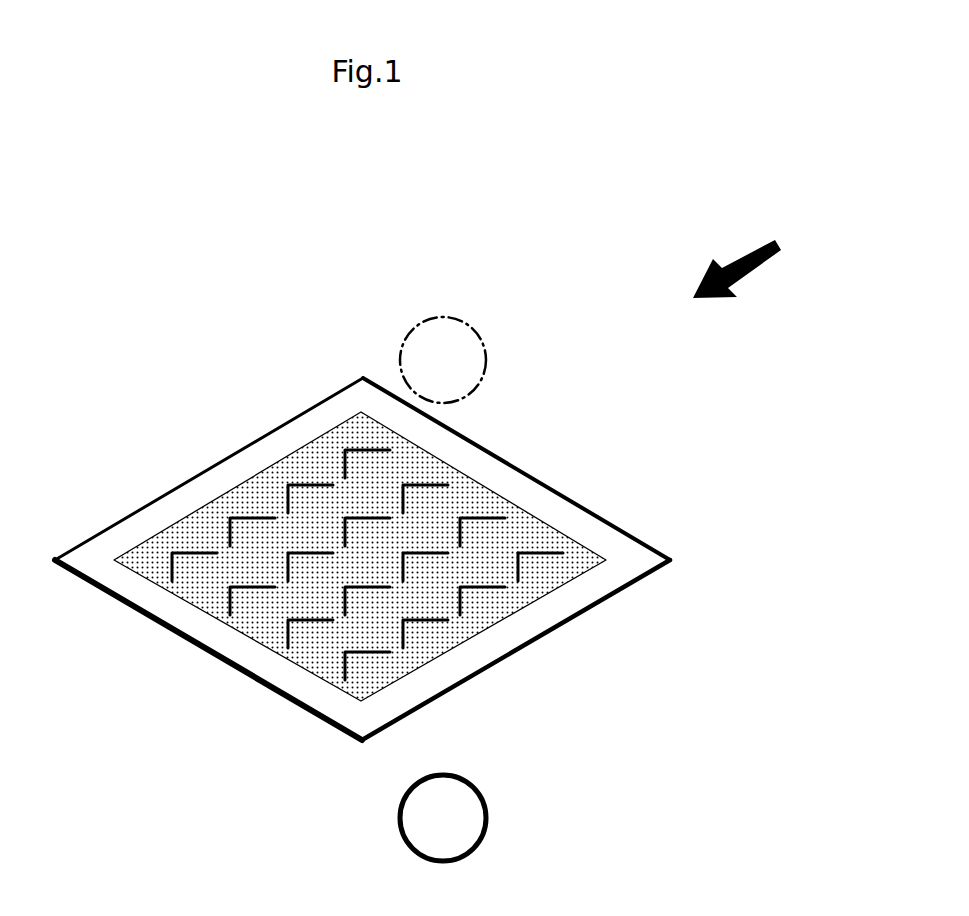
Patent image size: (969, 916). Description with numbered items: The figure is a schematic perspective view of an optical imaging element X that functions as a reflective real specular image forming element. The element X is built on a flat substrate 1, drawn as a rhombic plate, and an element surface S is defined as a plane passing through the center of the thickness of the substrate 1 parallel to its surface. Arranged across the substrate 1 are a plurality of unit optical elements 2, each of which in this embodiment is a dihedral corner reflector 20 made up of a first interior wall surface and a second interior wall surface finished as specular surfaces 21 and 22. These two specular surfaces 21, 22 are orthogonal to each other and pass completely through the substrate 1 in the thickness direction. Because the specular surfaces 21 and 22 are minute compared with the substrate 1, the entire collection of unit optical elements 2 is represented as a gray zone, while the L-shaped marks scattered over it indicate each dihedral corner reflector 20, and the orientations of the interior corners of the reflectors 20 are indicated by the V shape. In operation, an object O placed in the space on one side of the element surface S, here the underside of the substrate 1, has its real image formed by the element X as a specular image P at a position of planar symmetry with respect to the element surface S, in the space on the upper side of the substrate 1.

The substrate 1 is at (182, 470).
The unit optical element 2 is at (483, 508).
The dihedral corner reflector 20 is at (242, 606).
The specular surface 21 is at (540, 555).
The specular surface 22 is at (522, 578).
The element surface S is at (178, 637).
The optical imaging element X is at (279, 393).
The specular image P is at (495, 344).
The object O is at (394, 848).
The orientation of interior corners V is at (754, 262).